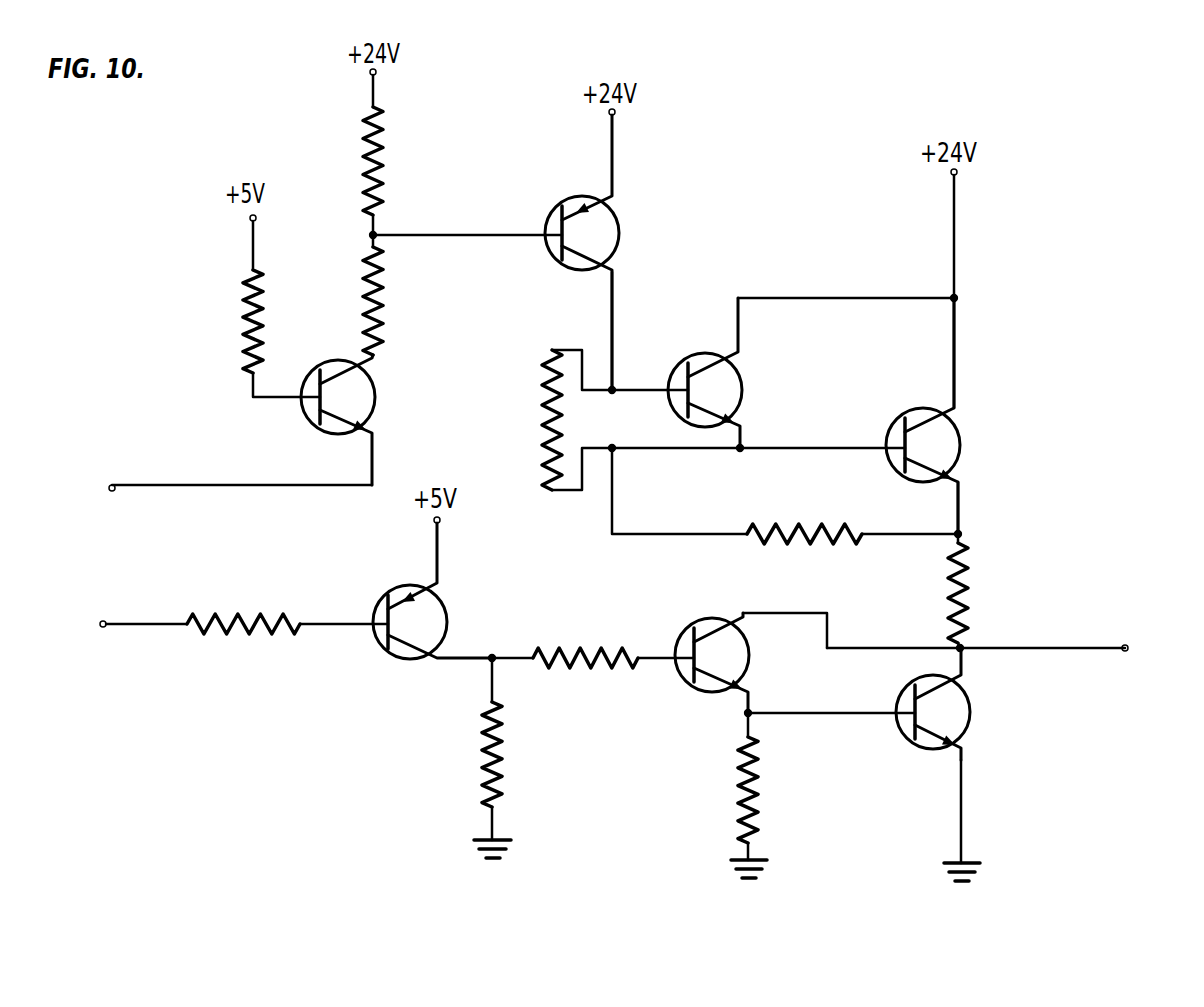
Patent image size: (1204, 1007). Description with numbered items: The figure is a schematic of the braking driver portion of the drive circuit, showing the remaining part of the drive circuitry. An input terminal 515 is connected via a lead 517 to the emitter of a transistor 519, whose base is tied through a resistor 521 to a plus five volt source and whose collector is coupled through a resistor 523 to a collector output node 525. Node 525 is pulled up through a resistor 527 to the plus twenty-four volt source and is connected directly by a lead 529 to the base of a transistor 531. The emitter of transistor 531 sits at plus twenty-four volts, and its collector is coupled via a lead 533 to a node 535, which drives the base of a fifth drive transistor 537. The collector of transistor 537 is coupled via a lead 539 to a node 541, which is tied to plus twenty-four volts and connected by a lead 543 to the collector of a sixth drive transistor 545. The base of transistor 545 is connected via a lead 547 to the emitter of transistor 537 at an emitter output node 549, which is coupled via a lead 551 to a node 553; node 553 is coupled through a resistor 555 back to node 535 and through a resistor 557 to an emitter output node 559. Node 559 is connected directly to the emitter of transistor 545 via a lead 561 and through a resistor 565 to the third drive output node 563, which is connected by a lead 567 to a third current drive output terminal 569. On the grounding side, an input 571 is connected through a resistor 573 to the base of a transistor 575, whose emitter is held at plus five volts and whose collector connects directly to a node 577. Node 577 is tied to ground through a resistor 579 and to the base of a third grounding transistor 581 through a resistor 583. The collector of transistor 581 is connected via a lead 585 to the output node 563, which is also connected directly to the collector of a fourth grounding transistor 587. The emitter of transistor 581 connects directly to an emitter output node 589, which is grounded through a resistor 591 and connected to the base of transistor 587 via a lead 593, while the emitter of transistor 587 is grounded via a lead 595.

The input terminal 515 is at (108, 487).
The lead 517 is at (200, 484).
The transistor 519 is at (376, 413).
The resistor 521 is at (244, 332).
The resistor 523 is at (364, 302).
The collector output node 525 is at (372, 233).
The resistor 527 is at (382, 152).
The lead 529 is at (444, 233).
The transistor 531 is at (618, 203).
The lead 533 is at (616, 326).
The node 535 is at (616, 386).
The fifth drive transistor 537 is at (744, 393).
The lead 539 is at (804, 297).
The node 541 is at (958, 297).
The lead 543 is at (952, 340).
The sixth drive transistor 545 is at (912, 410).
The lead 547 is at (830, 450).
The emitter output node 549 is at (742, 451).
The lead 551 is at (712, 451).
The node 553 is at (618, 452).
The resistor 555 is at (548, 396).
The resistor 557 is at (846, 532).
The emitter output node 559 is at (962, 533).
The lead 561 is at (961, 486).
The third drive output node 563 is at (966, 648).
The resistor 565 is at (968, 590).
The lead 567 is at (1028, 651).
The third current drive output terminal 569 is at (1128, 645).
The input 571 is at (104, 630).
The resistor 573 is at (250, 635).
The transistor 575 is at (392, 662).
The node 577 is at (494, 654).
The resistor 579 is at (502, 782).
The third grounding transistor 581 is at (752, 662).
The resistor 583 is at (610, 652).
The lead 585 is at (830, 632).
The fourth grounding transistor 587 is at (972, 724).
The emitter output node 589 is at (742, 716).
The resistor 591 is at (756, 790).
The lead 593 is at (836, 716).
The lead 595 is at (966, 815).